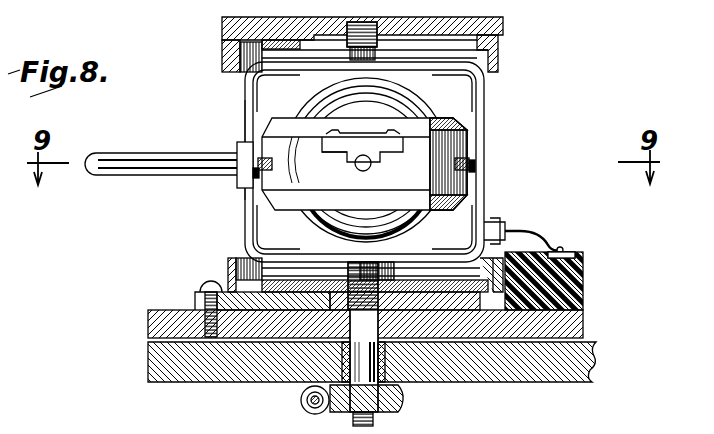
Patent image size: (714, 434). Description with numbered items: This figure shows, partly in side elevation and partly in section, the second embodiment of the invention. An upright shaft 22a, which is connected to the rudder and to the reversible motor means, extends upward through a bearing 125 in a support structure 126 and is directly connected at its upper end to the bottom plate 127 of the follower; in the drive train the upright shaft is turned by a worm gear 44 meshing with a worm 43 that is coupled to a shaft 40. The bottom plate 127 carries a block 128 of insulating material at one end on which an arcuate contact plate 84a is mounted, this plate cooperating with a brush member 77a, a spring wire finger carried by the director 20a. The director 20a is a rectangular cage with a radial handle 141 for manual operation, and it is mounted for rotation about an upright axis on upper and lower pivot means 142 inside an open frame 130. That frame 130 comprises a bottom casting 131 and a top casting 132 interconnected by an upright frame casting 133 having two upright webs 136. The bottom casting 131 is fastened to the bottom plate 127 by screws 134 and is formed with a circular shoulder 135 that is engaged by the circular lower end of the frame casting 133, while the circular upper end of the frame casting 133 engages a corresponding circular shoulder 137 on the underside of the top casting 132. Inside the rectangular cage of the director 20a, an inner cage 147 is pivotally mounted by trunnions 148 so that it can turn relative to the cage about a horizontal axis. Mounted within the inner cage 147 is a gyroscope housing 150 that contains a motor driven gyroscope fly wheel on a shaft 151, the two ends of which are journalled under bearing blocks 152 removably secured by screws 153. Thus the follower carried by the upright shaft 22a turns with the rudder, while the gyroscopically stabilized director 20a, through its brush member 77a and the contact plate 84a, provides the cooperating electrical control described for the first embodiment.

The top casting 132 is at (300, 20).
The pivot means 142 is at (368, 24).
The frame 130 is at (222, 40).
The circular shoulder 137 is at (246, 50).
The frame casting 133 is at (499, 56).
The upright webs 136 is at (301, 89).
The director 20a is at (240, 142).
The radial handle 141 is at (95, 174).
The inner cage 147 is at (277, 207).
The shaft 151 is at (368, 170).
The bearing blocks 152 is at (345, 152).
The screws 153 is at (358, 130).
The gyroscope housing 150 is at (447, 212).
The trunnions 148 is at (255, 172).
The brush member 77a is at (543, 240).
The arcuate contact plate 84a is at (575, 253).
The block of insulating material 128 is at (584, 270).
The circular shoulder 135 is at (237, 260).
The bottom casting 131 is at (197, 303).
The screws 134 is at (209, 284).
The bottom plate 127 is at (583, 320).
The support structure 126 is at (574, 380).
The upright shaft 22a is at (380, 372).
The bearing 125 is at (345, 366).
The worm gear 44 is at (400, 408).
The worm 43 is at (320, 409).
The shaft 40 is at (308, 410).